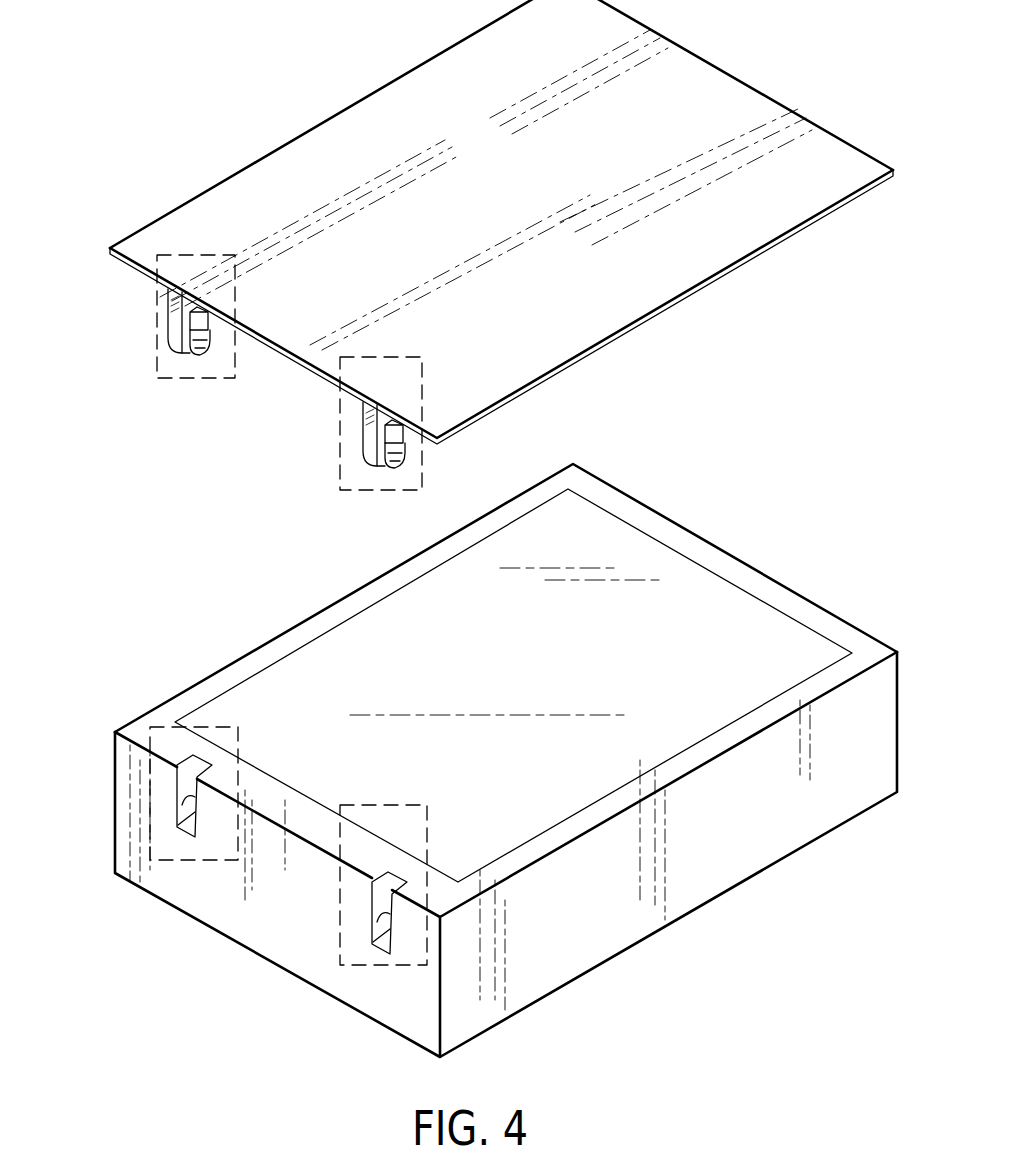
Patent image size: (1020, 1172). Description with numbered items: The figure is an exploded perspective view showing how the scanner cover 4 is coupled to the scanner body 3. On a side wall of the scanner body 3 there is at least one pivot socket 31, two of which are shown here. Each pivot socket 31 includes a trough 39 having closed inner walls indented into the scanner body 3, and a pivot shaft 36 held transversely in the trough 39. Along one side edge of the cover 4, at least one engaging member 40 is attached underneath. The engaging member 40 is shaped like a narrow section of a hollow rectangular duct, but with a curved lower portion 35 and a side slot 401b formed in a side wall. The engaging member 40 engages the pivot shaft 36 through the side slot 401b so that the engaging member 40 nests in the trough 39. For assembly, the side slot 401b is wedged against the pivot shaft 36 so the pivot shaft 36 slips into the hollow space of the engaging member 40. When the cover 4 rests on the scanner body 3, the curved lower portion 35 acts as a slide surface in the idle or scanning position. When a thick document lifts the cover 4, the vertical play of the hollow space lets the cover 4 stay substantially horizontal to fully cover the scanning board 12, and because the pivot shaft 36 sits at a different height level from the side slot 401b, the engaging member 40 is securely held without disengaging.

The cover 4 is at (290, 167).
The engaging member 40 is at (157, 372).
The curved lower portion 35 is at (195, 355).
The side slot 401b is at (212, 330).
The scanner body 3 is at (210, 685).
The scanning board 12 is at (635, 752).
The trough 39 is at (190, 770).
The pivot shaft 36 is at (187, 798).
The pivot socket 31 is at (153, 771).